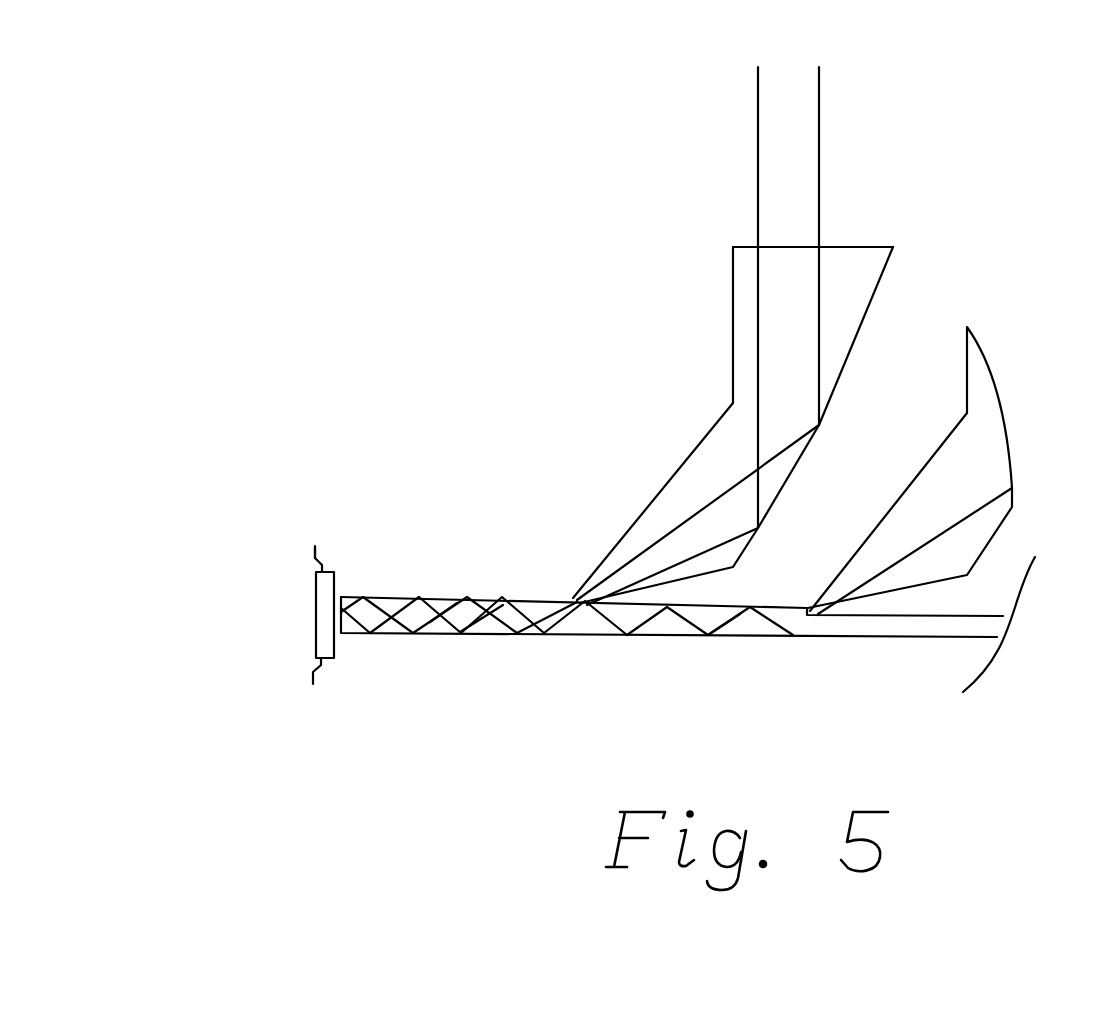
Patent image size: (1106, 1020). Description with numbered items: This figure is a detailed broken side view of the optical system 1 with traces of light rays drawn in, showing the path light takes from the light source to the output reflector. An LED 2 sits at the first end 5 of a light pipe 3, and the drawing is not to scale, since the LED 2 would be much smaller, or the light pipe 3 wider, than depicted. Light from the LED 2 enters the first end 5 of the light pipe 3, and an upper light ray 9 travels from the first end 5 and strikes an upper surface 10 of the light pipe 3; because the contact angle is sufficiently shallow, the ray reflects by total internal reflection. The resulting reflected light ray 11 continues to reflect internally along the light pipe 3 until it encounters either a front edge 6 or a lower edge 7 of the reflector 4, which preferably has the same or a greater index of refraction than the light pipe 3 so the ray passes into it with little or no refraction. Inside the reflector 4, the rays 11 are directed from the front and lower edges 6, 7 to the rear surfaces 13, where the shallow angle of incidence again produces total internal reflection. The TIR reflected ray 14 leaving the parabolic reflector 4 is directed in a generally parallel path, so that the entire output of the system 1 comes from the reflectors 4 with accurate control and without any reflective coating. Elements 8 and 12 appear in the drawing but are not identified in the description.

The optical system 1 is at (540, 290).
The LED 2 is at (315, 613).
The light pipe 3 is at (441, 603).
The reflector 4 is at (788, 343).
The first end 5 is at (357, 617).
The front edge 6 is at (580, 603).
The lower edge 7 is at (590, 606).
The bracket 8 is at (857, 247).
The upper light ray 9 is at (355, 597).
The upper surface 10 is at (395, 600).
The reflected light ray 11 is at (455, 617).
The light guide plate 12 is at (755, 637).
The rear surface 13 is at (760, 527).
The TIR reflected ray 14 is at (758, 180).